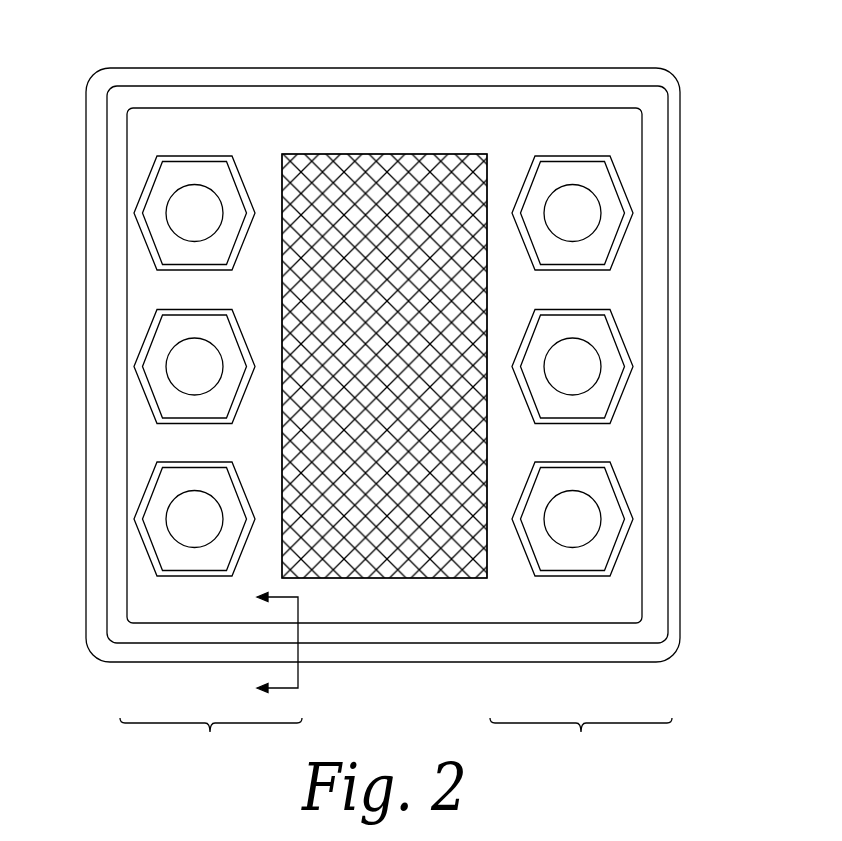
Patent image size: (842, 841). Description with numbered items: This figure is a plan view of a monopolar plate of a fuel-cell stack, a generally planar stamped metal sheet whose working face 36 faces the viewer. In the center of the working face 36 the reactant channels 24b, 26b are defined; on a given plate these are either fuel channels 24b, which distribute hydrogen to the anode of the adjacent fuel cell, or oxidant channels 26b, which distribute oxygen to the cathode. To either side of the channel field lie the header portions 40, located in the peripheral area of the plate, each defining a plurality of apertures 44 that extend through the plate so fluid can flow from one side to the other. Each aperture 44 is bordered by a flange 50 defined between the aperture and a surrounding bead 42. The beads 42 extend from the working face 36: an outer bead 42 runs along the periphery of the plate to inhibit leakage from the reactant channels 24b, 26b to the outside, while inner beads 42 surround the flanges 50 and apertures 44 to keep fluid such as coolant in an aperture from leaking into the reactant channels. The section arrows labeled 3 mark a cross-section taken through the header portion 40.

The bead 42 is at (120, 100).
The aperture 44 is at (192, 202).
The flange 50 is at (610, 207).
The fuel channel 24b is at (384, 309).
The oxidant channel 26b is at (384, 384).
The working face 36 is at (400, 613).
The header portion 40 is at (396, 739).
The section line 3- 3 is at (269, 646).